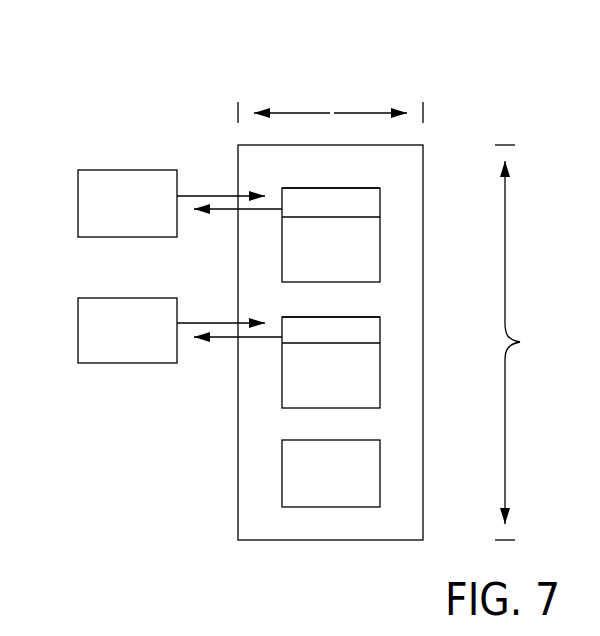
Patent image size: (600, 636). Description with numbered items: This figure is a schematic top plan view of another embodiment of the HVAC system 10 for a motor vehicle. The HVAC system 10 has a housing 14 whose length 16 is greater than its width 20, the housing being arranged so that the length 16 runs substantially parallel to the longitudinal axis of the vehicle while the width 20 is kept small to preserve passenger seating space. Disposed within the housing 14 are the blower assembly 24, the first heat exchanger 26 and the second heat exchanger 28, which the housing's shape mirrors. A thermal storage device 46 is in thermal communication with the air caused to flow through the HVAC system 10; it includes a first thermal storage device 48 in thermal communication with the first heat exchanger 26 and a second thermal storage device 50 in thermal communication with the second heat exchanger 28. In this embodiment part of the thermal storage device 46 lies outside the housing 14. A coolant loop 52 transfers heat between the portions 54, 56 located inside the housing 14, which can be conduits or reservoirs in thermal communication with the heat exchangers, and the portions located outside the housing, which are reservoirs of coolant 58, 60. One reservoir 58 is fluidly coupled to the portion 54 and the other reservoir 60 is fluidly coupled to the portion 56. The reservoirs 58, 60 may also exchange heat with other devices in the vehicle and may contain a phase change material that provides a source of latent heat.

The HVAC system 10 is at (112, 84).
The housing 14 is at (423, 145).
The length 16 is at (520, 342).
The width 20 is at (350, 113).
The blower assembly 24 is at (344, 483).
The first heat exchanger 26 is at (344, 387).
The second heat exchanger 28 is at (344, 258).
The thermal storage device 46 is at (206, 172).
The first thermal storage device 48 is at (368, 317).
The second thermal storage device 50 is at (368, 188).
The coolant loop 52 is at (222, 198).
The portion of thermal storage device located inside the housing 54 is at (380, 330).
The portion of thermal storage device located inside the housing 56 is at (380, 202).
The reservoir of coolant 58 is at (78, 330).
The reservoir of coolant 60 is at (78, 200).